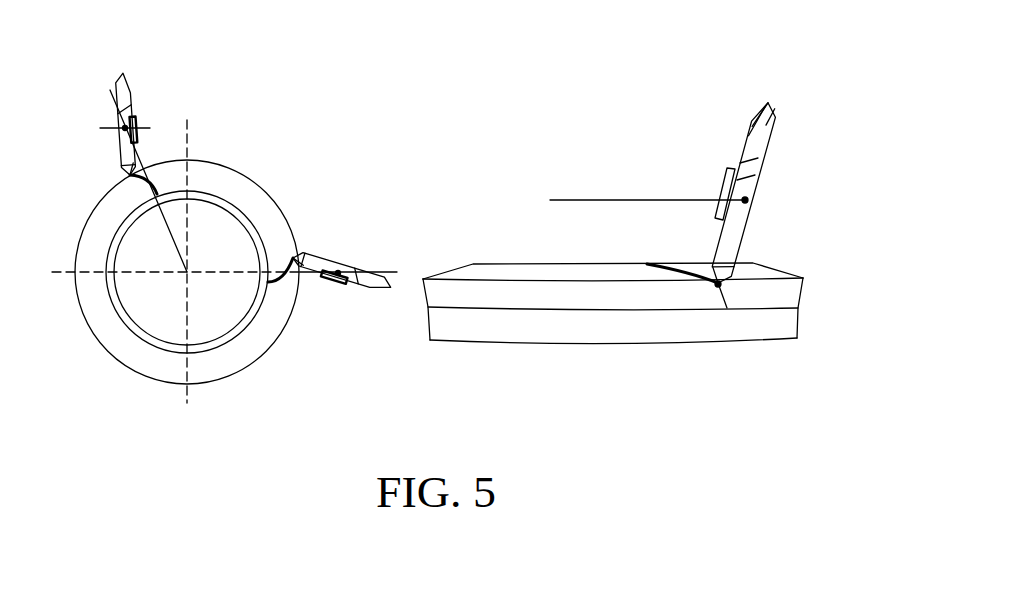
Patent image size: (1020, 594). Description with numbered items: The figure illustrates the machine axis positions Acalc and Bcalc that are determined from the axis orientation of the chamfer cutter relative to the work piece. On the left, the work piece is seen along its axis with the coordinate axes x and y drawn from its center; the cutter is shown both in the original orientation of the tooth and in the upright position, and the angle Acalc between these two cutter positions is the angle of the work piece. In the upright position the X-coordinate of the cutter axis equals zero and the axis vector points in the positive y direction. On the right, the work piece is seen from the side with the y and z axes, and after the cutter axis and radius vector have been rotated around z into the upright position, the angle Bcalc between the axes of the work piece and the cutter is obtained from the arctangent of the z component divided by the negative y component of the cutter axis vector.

The A-axis machine position angle Acalc is at (133, 105).
The B-axis machine position angle Bcalc is at (780, 211).
The X-axis x is at (187, 272).
The Y-axis y is at (187, 272).
The Z-axis z is at (613, 387).